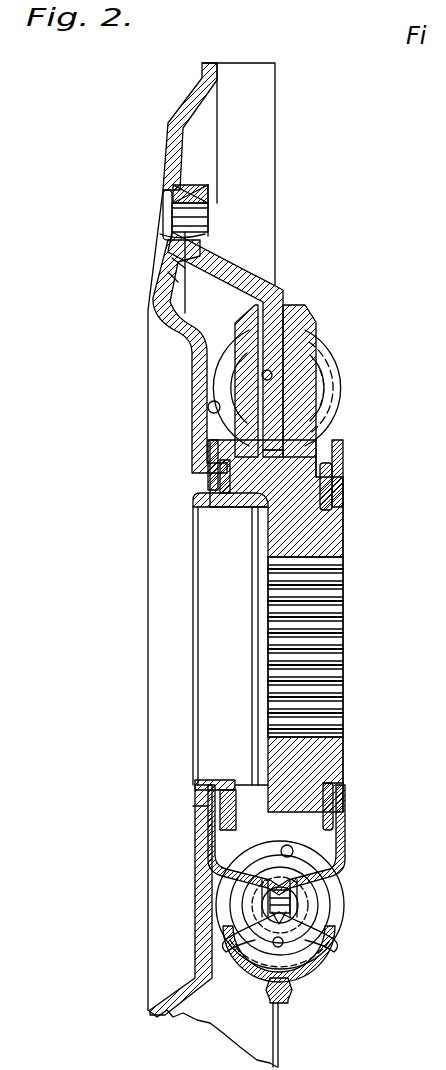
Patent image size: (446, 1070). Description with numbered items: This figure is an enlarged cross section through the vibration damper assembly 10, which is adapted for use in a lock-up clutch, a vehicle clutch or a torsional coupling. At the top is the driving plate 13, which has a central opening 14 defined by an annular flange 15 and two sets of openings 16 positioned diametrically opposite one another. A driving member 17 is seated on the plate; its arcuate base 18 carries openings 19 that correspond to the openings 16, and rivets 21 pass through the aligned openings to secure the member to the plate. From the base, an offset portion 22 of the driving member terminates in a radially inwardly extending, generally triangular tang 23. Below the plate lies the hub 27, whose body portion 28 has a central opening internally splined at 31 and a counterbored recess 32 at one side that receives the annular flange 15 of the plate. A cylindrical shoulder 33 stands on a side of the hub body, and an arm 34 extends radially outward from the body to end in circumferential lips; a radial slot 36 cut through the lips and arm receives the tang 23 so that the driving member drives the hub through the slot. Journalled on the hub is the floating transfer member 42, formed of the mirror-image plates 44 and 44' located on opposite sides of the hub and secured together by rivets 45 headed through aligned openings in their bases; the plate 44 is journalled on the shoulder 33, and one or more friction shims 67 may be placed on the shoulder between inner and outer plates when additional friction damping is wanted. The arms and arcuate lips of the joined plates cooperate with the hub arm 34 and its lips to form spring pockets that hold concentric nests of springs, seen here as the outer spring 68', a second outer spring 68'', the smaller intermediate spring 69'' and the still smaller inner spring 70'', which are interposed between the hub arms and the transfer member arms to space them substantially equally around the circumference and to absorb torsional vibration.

The vibration damper assembly 10 is at (355, 266).
The driving plate 13 is at (200, 128).
The central opening 14 is at (208, 675).
The annular flange 15 is at (200, 778).
The openings 16 is at (165, 232).
The driving member 17 is at (262, 262).
The arcuate base 18 is at (190, 193).
The openings 19 is at (185, 226).
The rivets 21 is at (170, 216).
The offset portion 22 is at (212, 274).
The tang 23 is at (317, 345).
The hub 27 is at (350, 520).
The body portion 28 is at (345, 758).
The internal splines 31 is at (326, 612).
The counterbored recess 32 is at (268, 498).
The cylindrical shoulder 33 is at (338, 806).
The arm 34 is at (322, 396).
The radial slot 36 is at (262, 376).
The transfer member 42 is at (356, 862).
The plate 44 is at (269, 836).
The plate 44' is at (147, 814).
The rivets 45 is at (270, 945).
The friction shims 67 is at (340, 484).
The outer spring 68' is at (361, 396).
The outer spring 68'' is at (308, 905).
The intermediate spring 69'' is at (324, 905).
The inner spring 70'' is at (198, 907).